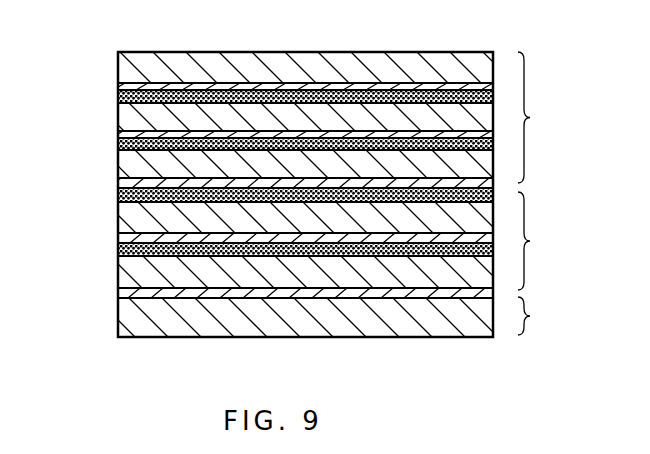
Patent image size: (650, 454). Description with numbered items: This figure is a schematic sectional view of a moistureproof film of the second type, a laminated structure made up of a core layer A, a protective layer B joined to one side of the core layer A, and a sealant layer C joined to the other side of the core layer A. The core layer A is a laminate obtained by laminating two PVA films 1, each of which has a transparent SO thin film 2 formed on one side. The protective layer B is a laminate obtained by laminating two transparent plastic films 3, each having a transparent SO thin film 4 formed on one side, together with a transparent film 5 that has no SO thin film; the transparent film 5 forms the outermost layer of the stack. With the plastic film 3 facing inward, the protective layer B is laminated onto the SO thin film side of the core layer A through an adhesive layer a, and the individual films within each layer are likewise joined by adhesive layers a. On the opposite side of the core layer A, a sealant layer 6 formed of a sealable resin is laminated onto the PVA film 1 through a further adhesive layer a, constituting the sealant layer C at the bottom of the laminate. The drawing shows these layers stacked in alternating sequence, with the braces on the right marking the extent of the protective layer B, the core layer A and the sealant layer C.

The transparent film 5 is at (224, 62).
The adhesive layer a is at (118, 86).
The transparent SO thin film 4 is at (118, 97).
The transparent plastic film 3 is at (130, 115).
The transparent SO thin film 2 is at (120, 196).
The PVA film 1 is at (122, 218).
The sealant layer 6 is at (205, 330).
The core layer A is at (535, 241).
The protective layer B is at (535, 117).
The sealant layer C is at (535, 316).